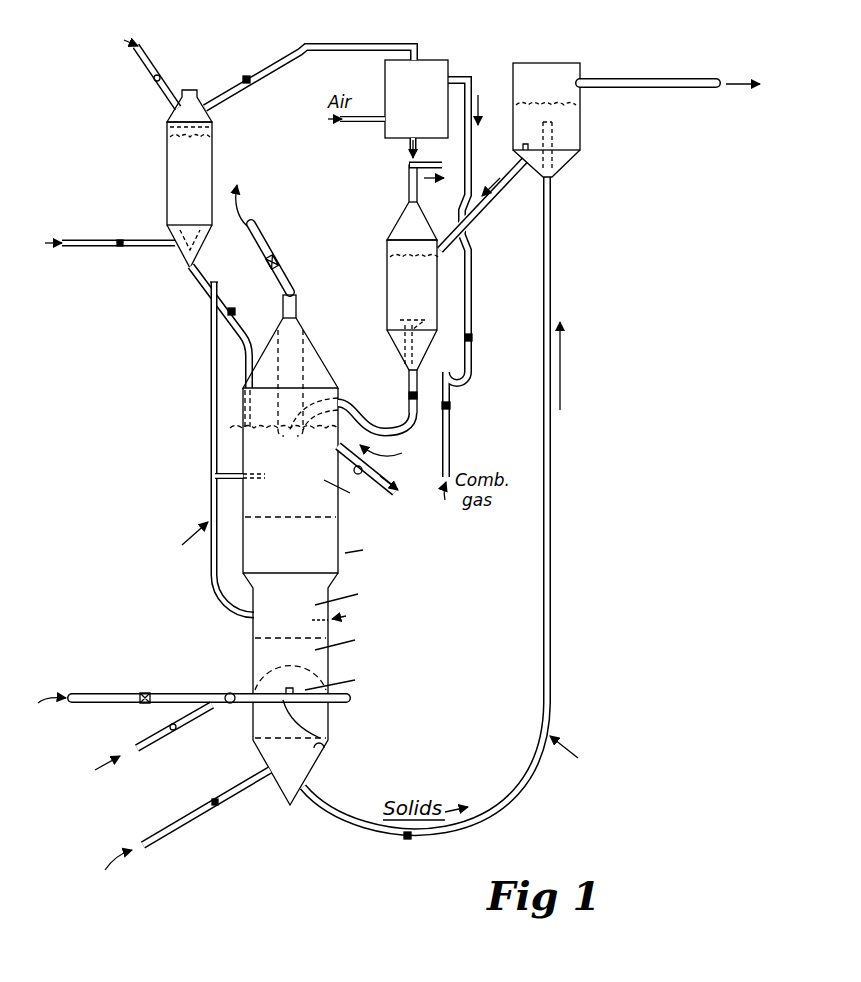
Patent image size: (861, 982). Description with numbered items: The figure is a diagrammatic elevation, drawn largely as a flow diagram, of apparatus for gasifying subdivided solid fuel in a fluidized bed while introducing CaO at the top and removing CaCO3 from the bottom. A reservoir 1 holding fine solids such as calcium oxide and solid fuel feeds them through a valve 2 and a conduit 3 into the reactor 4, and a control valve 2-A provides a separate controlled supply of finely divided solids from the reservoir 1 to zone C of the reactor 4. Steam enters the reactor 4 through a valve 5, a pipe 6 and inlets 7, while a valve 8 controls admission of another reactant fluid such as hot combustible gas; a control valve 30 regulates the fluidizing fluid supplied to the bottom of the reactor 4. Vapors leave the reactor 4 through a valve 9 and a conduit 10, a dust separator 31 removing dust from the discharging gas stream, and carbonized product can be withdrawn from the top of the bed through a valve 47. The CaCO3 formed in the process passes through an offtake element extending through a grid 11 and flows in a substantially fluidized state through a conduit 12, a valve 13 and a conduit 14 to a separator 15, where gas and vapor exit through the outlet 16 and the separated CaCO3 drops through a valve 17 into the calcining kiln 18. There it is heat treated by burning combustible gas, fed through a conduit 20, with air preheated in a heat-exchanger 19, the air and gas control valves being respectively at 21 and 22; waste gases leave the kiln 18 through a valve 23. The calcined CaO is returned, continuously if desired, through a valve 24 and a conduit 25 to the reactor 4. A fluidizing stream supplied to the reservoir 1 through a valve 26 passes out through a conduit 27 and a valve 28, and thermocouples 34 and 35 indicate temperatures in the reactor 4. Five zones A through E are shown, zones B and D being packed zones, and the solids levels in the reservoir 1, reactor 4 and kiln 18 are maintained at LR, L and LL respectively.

The reservoir 1 is at (170, 173).
The valve 2 is at (234, 310).
The control valve 2-A is at (212, 312).
The conduit 3 is at (247, 340).
The reactor 4 is at (318, 338).
The valve 5 is at (146, 692).
The pipe 6 is at (236, 692).
The inlets 7 is at (302, 703).
The valve 8 is at (174, 736).
The valve 9 is at (282, 259).
The conduit 10 is at (262, 248).
The grid 11 is at (326, 750).
The conduit 12 is at (350, 812).
The valve 13 is at (405, 840).
The conduit 14 is at (540, 625).
The separator 15 is at (570, 143).
The gas and vapor outlet 16 is at (614, 82).
The valve 17 is at (492, 197).
The calcining kiln 18 is at (433, 295).
The heat-exchanger 19 is at (385, 78).
The conduit 20 is at (450, 444).
The air control valve 21 is at (473, 338).
The gas control valve 22 is at (452, 406).
The valve 23 is at (409, 182).
The valve 24 is at (391, 443).
The conduit 25 is at (362, 421).
The valve 26 is at (121, 248).
The conduit 27 is at (229, 92).
The valve 28 is at (246, 76).
The control valve 30 is at (222, 808).
The dust separator 31 is at (354, 377).
The thermocouple 34 is at (344, 617).
The thermocouple 35 is at (236, 478).
The valve 47 is at (366, 462).